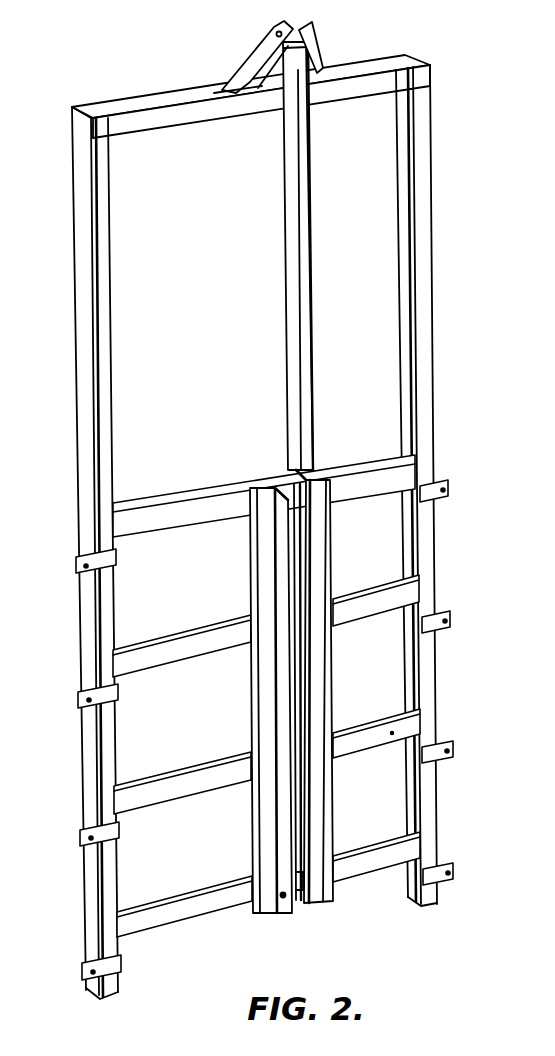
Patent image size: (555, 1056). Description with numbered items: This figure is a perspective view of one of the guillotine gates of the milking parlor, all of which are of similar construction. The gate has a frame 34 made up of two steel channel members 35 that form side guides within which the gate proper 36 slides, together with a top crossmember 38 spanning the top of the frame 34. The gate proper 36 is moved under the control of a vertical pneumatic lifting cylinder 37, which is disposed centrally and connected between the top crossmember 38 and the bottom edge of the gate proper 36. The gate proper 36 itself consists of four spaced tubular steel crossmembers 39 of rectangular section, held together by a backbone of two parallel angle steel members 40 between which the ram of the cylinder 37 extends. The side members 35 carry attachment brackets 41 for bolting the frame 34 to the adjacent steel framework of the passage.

The frame 34 is at (246, 527).
The steel channel members 35 is at (79, 325).
The gate proper 36 is at (178, 798).
The cylinder 37 is at (304, 198).
The top crossmember 38 is at (355, 70).
The tubular steel crossmembers 39 is at (352, 612).
The angle steel members 40 is at (258, 572).
The attachment brackets 41 is at (447, 482).